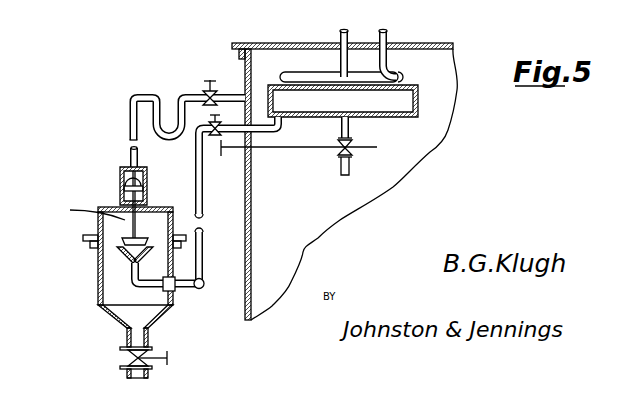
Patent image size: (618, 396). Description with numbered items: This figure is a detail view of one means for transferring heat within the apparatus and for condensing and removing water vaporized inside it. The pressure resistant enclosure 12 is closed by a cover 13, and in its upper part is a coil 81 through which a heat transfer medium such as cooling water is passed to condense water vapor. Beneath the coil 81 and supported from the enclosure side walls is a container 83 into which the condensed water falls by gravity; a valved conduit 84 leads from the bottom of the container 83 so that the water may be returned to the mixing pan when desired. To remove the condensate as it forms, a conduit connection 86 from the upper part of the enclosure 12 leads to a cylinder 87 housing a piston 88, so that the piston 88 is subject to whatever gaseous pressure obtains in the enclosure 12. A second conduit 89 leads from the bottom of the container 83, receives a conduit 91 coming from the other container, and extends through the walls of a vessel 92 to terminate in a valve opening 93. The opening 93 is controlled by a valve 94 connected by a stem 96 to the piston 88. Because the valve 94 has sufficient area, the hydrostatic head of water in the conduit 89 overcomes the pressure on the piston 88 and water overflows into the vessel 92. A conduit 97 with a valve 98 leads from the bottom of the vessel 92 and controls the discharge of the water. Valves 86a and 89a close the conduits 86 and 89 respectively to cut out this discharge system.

The pressure resistant enclosure 12 is at (247, 320).
The cover 13 is at (437, 43).
The coil 81 is at (340, 36).
The container 83 is at (393, 118).
The valved conduit 84 is at (350, 130).
The conduit connection 86 is at (196, 72).
The valve 86a is at (210, 88).
The cylinder 87 is at (120, 170).
The piston 88 is at (120, 181).
The second conduit 89 is at (280, 131).
The valve 89a is at (212, 137).
The conduit 91 is at (205, 283).
The vessel 92 is at (98, 287).
The valve opening 93 is at (115, 250).
The valve 94 is at (124, 240).
The stem 96 is at (83, 212).
The conduit 97 is at (148, 337).
The valve 98 is at (168, 358).